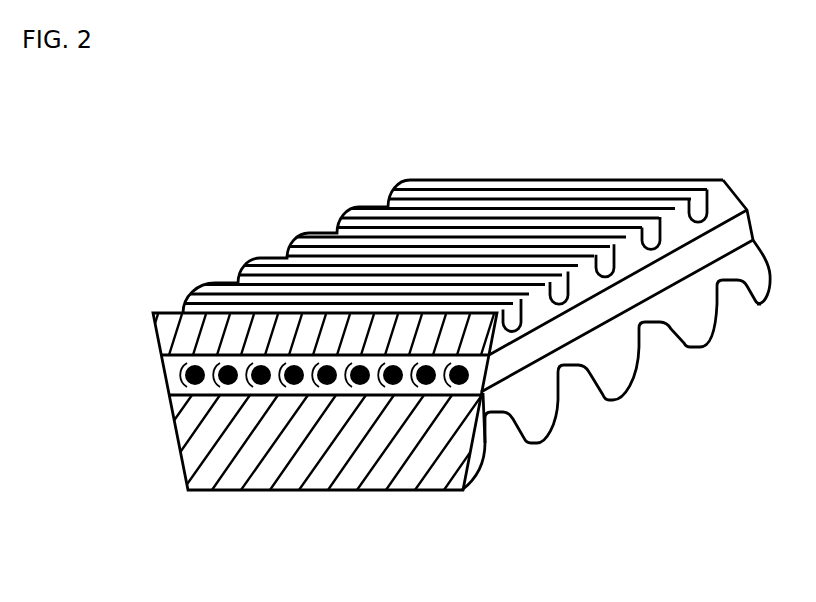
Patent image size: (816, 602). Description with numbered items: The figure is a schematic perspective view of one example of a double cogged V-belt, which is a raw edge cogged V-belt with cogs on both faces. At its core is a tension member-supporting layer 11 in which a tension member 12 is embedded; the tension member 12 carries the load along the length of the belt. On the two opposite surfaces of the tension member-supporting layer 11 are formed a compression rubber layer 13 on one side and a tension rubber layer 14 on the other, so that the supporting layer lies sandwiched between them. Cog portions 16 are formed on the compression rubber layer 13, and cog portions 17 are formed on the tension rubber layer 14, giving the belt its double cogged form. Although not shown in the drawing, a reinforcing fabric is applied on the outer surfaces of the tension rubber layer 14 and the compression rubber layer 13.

The tension member-supporting layer 11 is at (166, 371).
The tension member 12 is at (367, 357).
The compression rubber layer 13 is at (292, 493).
The tension rubber layer 14 is at (171, 322).
The cog portion 16 is at (703, 340).
The cog portion 17 is at (670, 205).